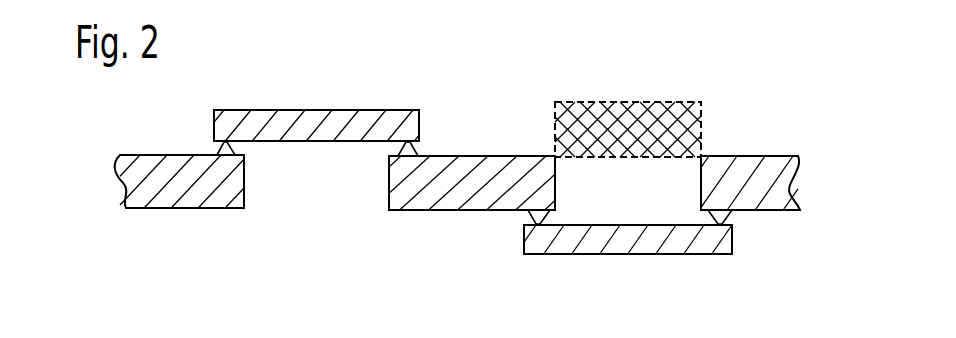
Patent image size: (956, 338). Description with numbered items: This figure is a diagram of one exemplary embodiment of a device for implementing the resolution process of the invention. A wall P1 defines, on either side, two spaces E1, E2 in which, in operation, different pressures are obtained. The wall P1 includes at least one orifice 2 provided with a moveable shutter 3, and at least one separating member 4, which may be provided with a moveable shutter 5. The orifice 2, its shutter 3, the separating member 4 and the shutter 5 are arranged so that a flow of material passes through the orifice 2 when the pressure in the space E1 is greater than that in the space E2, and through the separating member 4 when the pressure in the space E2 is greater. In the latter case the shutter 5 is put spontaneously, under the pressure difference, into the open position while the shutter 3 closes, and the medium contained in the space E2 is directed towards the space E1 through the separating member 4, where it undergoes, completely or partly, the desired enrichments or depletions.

The orifice 2 is at (298, 179).
The shutter 3 is at (358, 111).
The separating member 4 is at (676, 108).
The shutter 5 is at (673, 255).
The wall P1 is at (745, 156).
The space E1 is at (592, 241).
The space E2 is at (472, 152).